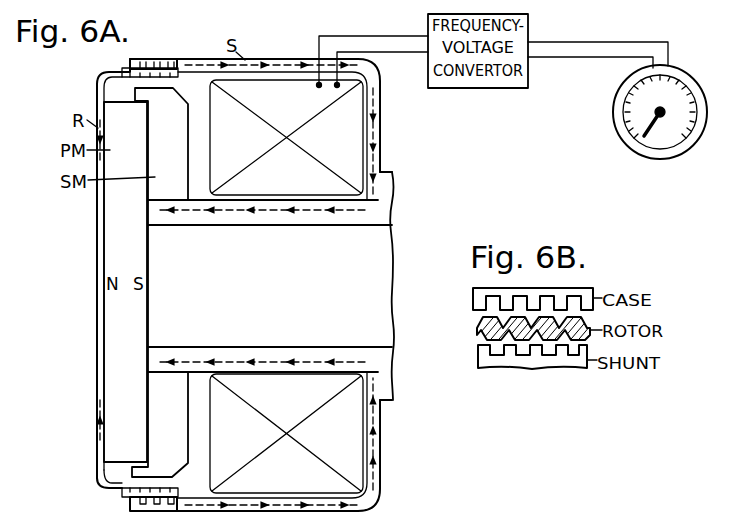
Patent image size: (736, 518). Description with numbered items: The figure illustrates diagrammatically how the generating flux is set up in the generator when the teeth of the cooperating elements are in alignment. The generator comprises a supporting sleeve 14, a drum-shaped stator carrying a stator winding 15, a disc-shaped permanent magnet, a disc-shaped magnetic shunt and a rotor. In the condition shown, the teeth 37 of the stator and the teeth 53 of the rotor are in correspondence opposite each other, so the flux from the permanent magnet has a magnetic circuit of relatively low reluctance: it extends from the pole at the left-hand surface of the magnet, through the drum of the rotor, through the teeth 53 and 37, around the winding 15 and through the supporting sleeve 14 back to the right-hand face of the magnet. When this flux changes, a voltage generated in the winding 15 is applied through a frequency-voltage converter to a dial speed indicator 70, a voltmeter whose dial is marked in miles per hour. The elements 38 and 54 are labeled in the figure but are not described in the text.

In FIG. 6A, the supporting sleeve 14 is at (380, 217).
In FIG. 6A, the stator winding 15 is at (357, 138).
In FIG. 6A, the teeth of the stator 37 is at (130, 63).
In FIG. 6B, the teeth of the stator 37 is at (473, 298).
In FIG. 6B, the shunt 38 is at (480, 352).
In FIG. 6A, the teeth of the rotor 53 is at (168, 77).
In FIG. 6B, the teeth of the rotor 53 is at (477, 322).
In FIG. 6B, the rotor teeth 54 is at (483, 337).
In FIG. 6A, the dial speed indicator 70 is at (617, 95).